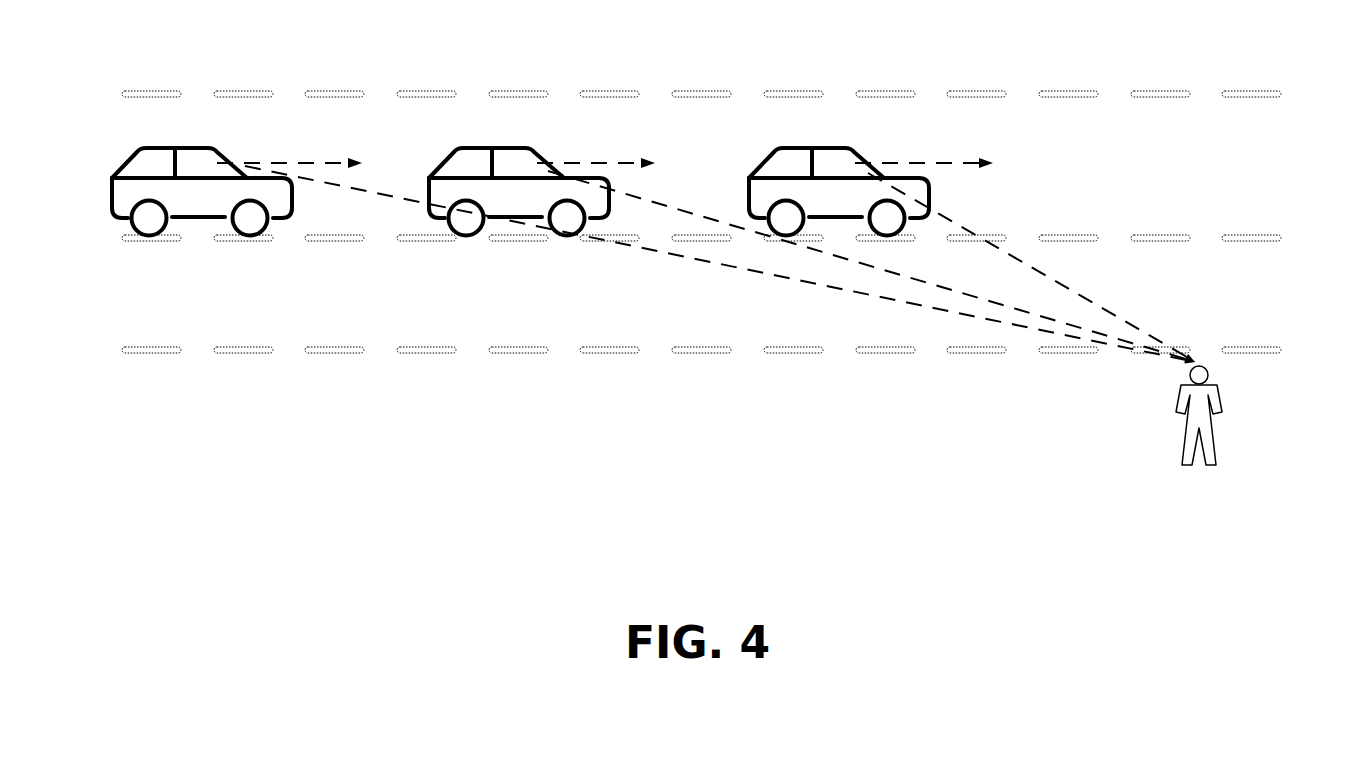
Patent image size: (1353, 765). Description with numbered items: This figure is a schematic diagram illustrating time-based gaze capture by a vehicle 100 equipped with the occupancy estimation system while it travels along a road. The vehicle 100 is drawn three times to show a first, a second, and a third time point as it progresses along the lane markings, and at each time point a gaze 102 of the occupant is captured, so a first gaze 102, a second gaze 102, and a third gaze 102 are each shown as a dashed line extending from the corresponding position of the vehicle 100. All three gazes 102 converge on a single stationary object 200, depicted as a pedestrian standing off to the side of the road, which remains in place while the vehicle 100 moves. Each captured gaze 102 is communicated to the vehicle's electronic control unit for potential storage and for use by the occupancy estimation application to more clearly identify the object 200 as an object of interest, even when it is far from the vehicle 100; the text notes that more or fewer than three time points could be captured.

The vehicle 100 is at (177, 146).
The gaze 102 is at (323, 162).
The object 200 is at (1207, 375).